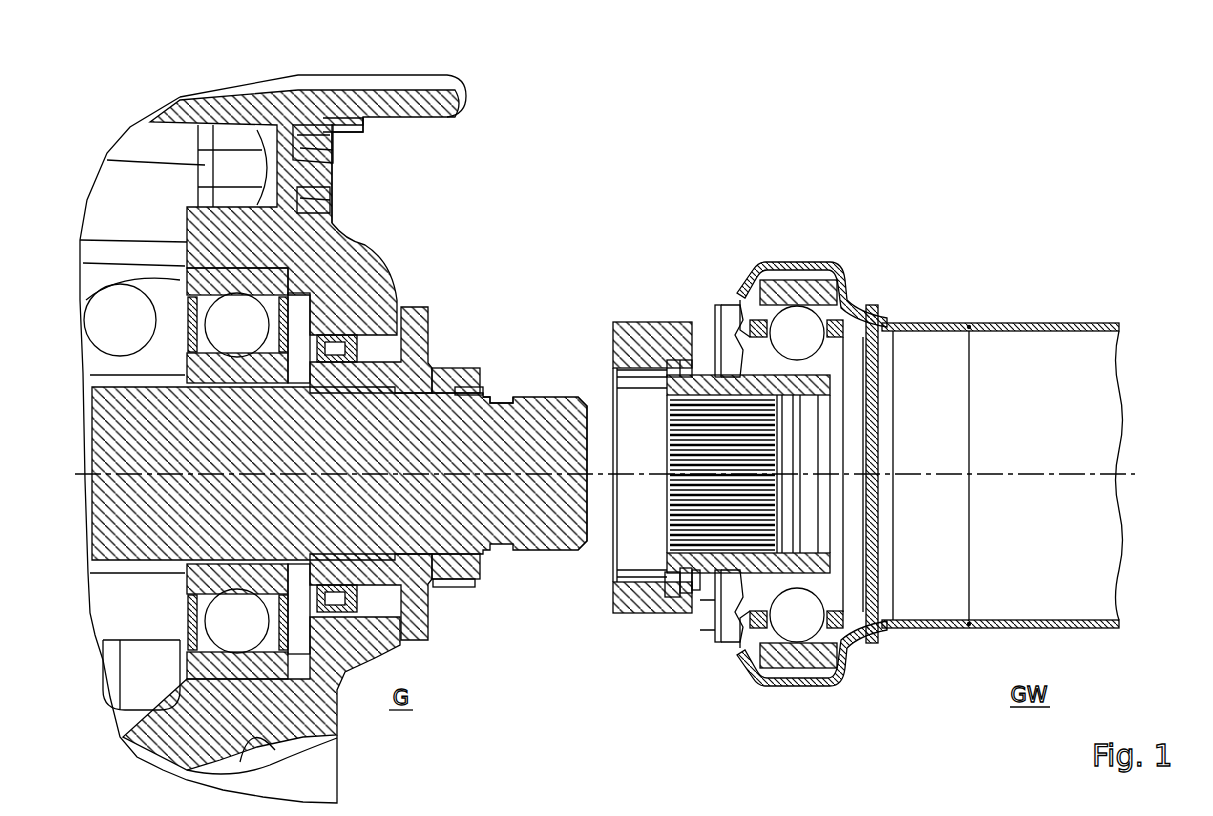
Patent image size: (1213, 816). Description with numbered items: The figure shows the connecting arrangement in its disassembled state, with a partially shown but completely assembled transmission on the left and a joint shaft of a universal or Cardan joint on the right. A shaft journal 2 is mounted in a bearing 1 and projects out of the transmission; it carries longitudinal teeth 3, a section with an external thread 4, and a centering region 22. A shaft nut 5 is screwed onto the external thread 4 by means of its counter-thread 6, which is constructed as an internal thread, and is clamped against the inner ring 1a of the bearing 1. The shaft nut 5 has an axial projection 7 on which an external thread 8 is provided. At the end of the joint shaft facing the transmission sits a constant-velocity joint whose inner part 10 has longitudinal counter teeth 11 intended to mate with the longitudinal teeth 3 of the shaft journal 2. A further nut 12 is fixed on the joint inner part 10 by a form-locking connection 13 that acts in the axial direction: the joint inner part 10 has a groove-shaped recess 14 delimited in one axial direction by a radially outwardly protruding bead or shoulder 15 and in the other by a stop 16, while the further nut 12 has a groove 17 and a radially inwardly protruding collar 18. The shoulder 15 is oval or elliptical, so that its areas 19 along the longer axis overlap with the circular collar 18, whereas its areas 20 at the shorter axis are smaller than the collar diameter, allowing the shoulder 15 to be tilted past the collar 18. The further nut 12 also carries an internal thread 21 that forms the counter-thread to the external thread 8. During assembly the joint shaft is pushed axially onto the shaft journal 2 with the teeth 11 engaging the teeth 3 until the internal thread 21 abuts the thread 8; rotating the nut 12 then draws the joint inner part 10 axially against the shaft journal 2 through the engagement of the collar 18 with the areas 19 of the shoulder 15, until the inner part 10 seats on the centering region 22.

The bearing 1 is at (277, 320).
The inner ring of the bearing 1a is at (273, 367).
The shaft journal 2 is at (533, 417).
The longitudinal teeth 3 is at (567, 400).
The external thread 4 is at (450, 393).
The shaft nut 5 is at (413, 320).
The counter-thread 6 is at (413, 387).
The axial projection 7 is at (480, 587).
The external thread 8 is at (453, 587).
The inner part of the constant velocity joint 10 is at (858, 651).
The longitudinal counter teeth 11 is at (672, 537).
The further nut 12 is at (650, 322).
The form-locking connection 13 is at (685, 626).
The groove-shaped recess 14 is at (697, 377).
The shoulder 15 is at (670, 360).
The stop 16 is at (700, 570).
The groove 17 is at (677, 577).
The collar 18 is at (687, 570).
The areas of the shoulder 19 is at (657, 388).
The areas of the shoulder 20 is at (650, 577).
The internal thread 21 is at (615, 322).
The centering region 22 is at (487, 395).